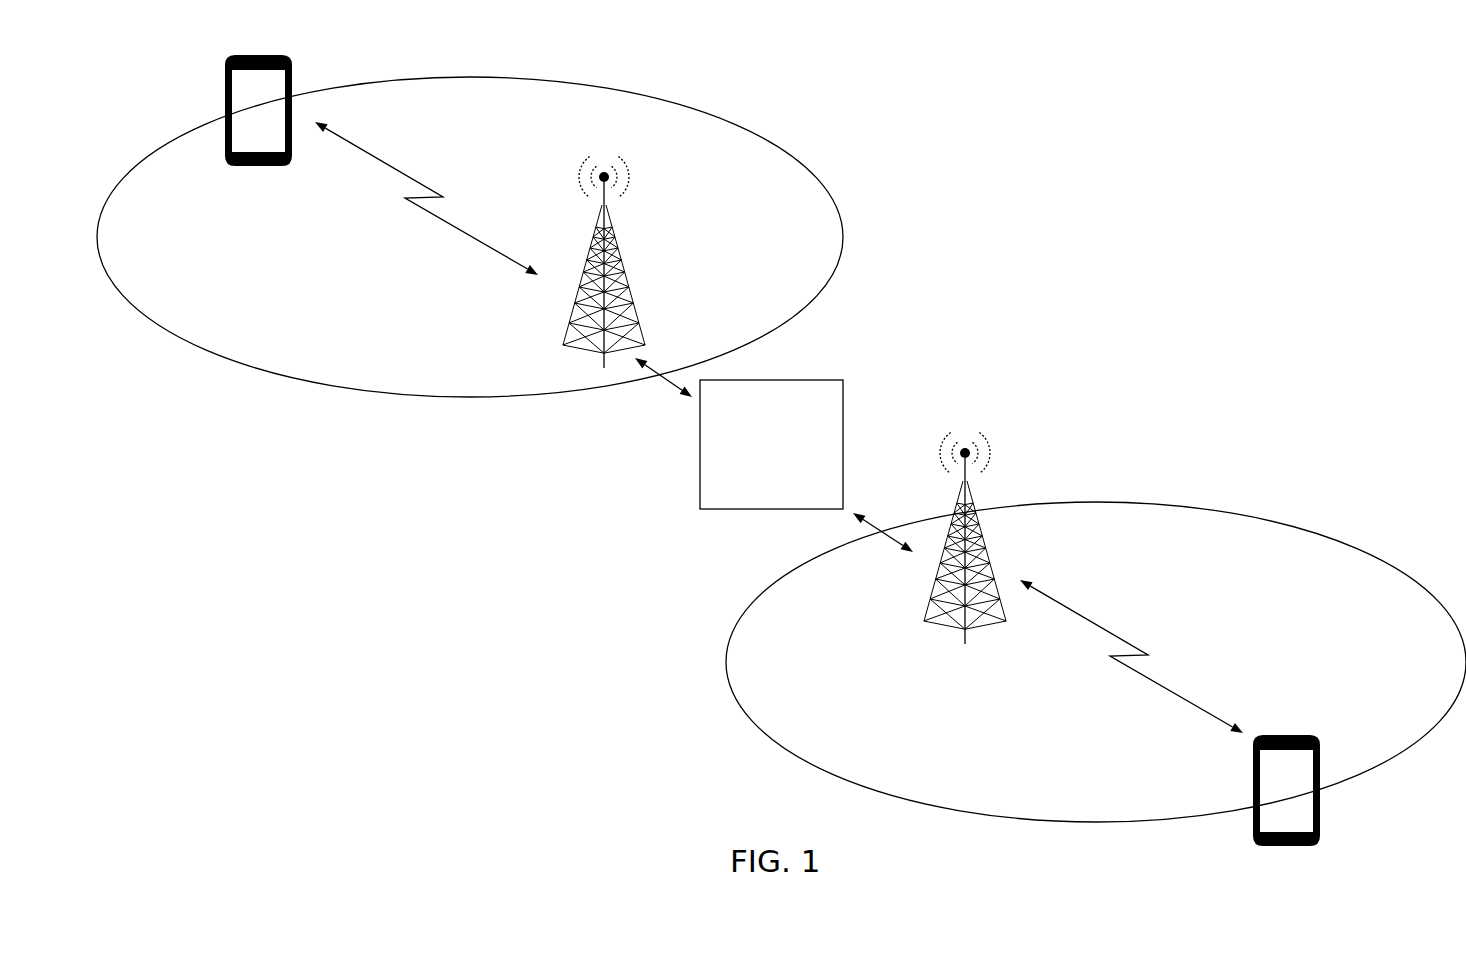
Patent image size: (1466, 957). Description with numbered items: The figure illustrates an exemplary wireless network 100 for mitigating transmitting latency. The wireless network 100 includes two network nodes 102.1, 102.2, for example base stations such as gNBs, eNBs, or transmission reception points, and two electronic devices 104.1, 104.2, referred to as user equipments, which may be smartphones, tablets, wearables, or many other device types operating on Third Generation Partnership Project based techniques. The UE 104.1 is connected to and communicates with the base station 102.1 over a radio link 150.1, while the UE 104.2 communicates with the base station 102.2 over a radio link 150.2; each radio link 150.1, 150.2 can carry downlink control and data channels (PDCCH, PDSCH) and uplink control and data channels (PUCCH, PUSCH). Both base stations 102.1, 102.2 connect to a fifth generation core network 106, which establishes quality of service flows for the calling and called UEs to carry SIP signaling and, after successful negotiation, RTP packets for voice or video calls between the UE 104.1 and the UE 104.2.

The wireless network 100 is at (1277, 156).
The network node 102.1 is at (664, 190).
The network node 102.2 is at (1027, 468).
The electronic device 104.1 is at (203, 70).
The electronic device 104.2 is at (1348, 806).
The 5G core network 106 is at (771, 444).
The radio link 150.1 is at (411, 232).
The radio link 150.2 is at (1146, 696).